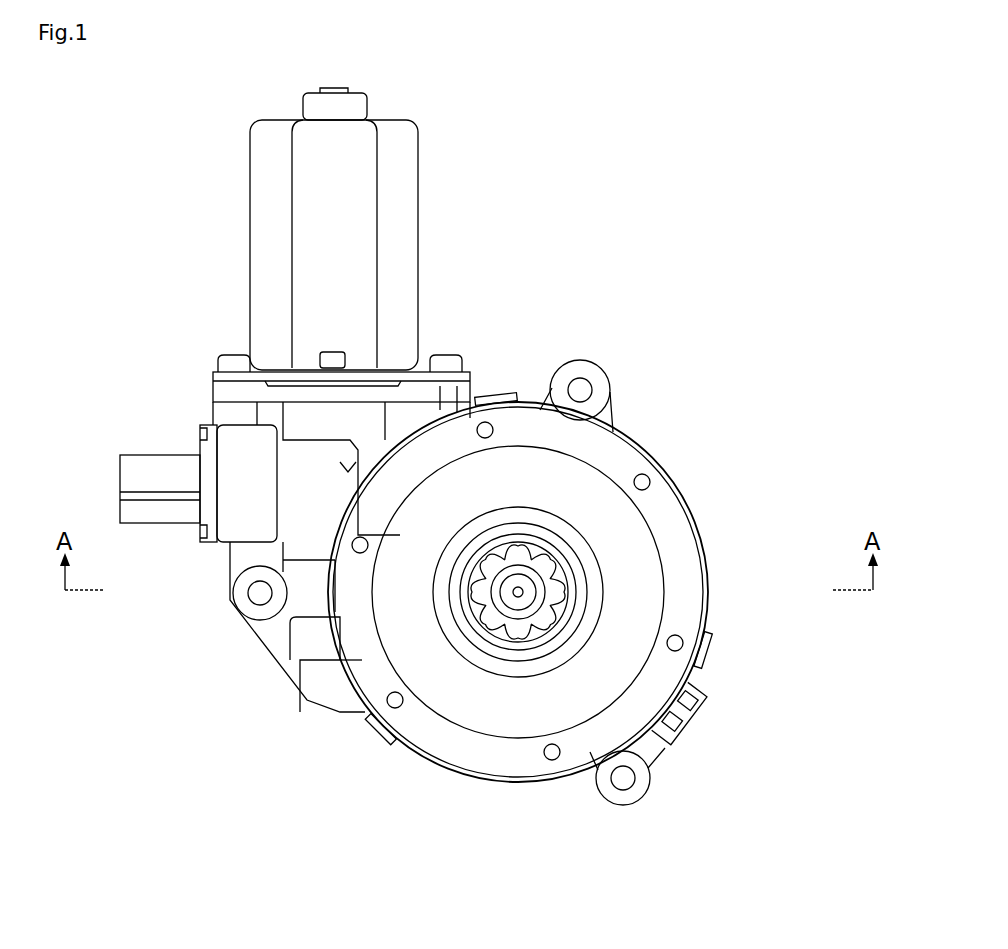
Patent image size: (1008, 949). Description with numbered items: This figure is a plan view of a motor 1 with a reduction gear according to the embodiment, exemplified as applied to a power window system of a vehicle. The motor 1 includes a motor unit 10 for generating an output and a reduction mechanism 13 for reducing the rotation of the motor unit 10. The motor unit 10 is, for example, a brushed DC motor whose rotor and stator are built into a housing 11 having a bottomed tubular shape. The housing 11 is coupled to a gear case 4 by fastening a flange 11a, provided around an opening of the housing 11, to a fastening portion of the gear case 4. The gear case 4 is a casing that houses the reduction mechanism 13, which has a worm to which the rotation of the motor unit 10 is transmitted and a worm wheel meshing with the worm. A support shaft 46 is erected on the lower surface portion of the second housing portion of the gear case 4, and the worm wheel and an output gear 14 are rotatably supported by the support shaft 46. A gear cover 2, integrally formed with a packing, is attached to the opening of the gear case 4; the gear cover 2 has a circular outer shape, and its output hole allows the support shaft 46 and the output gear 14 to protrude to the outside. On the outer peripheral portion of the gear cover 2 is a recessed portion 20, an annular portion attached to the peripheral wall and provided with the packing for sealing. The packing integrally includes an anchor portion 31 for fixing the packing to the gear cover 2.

The motor with a reduction gear 1 is at (696, 224).
The gear cover 2 is at (693, 582).
The gear case 4 is at (300, 640).
The motor unit 10 is at (236, 158).
The housing 11 is at (397, 186).
The flange 11a is at (425, 368).
The reduction mechanism 13 is at (366, 742).
The output gear 14 is at (530, 628).
The recessed portion 20 is at (610, 455).
The anchor portion 31 is at (657, 481).
The support shaft 46 is at (490, 628).